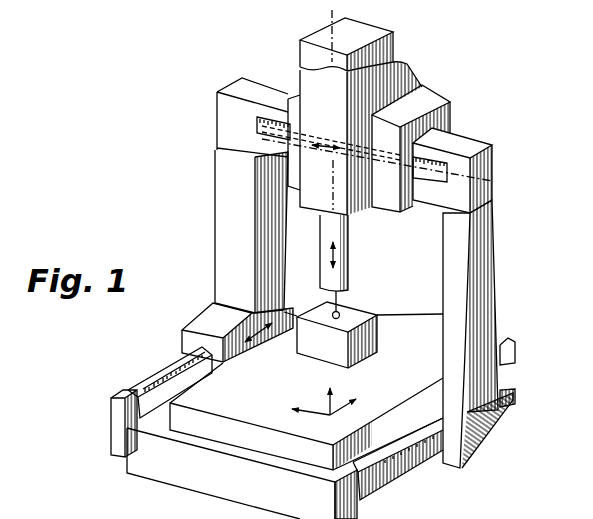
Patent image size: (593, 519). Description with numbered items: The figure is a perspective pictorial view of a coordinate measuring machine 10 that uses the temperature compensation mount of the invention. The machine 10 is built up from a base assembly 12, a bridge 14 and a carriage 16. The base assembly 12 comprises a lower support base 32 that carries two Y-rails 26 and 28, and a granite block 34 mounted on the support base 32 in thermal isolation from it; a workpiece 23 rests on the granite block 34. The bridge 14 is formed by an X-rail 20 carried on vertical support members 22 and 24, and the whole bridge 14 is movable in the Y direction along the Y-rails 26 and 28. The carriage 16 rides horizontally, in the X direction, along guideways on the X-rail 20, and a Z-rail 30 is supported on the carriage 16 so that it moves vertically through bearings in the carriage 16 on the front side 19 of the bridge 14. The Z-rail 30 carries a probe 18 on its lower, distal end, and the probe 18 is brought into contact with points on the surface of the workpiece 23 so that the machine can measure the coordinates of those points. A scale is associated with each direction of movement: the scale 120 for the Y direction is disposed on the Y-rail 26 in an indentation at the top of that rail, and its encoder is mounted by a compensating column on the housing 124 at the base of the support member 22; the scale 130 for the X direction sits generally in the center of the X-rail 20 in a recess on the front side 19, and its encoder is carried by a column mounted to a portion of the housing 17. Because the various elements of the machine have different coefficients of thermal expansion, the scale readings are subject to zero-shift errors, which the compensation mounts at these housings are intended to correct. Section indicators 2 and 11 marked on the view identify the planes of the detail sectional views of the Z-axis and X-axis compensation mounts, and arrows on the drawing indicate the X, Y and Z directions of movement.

The section line 2- 2 is at (352, 14).
The coordinate measuring machine 10 is at (199, 211).
The section line 11- 11 is at (222, 108).
The base assembly 12 is at (124, 469).
The bridge 14 is at (488, 133).
The carriage 16 is at (438, 96).
The housing 17 is at (405, 64).
The probe 18 is at (347, 289).
The front side 19 is at (241, 137).
The X-rail 20 is at (492, 163).
The vertical support member 22 is at (223, 182).
The workpiece 23 is at (367, 338).
The vertical support member 24 is at (489, 240).
The Y-rail 26 is at (112, 393).
The Y-rail 28 is at (398, 469).
The Z-rail 30 is at (350, 241).
The lower support base 32 is at (217, 478).
The granite block 34 is at (248, 440).
The scale 120 is at (170, 368).
The housing 124 is at (208, 320).
The scale 130 is at (272, 117).